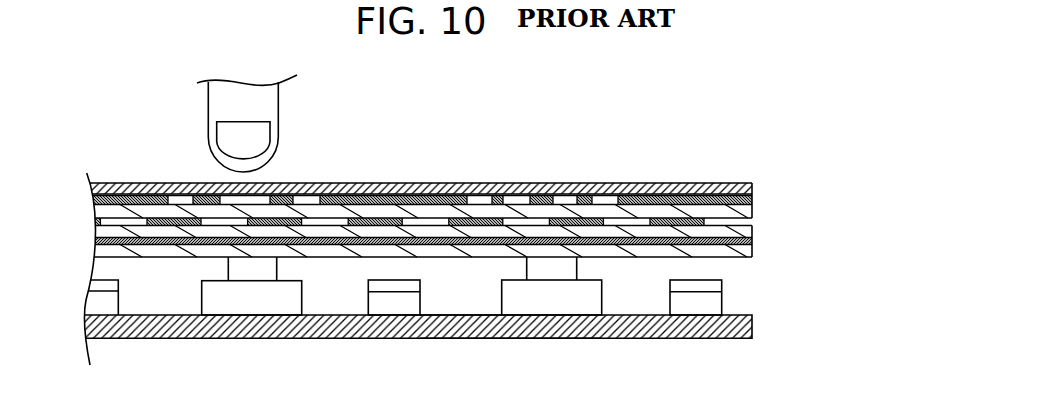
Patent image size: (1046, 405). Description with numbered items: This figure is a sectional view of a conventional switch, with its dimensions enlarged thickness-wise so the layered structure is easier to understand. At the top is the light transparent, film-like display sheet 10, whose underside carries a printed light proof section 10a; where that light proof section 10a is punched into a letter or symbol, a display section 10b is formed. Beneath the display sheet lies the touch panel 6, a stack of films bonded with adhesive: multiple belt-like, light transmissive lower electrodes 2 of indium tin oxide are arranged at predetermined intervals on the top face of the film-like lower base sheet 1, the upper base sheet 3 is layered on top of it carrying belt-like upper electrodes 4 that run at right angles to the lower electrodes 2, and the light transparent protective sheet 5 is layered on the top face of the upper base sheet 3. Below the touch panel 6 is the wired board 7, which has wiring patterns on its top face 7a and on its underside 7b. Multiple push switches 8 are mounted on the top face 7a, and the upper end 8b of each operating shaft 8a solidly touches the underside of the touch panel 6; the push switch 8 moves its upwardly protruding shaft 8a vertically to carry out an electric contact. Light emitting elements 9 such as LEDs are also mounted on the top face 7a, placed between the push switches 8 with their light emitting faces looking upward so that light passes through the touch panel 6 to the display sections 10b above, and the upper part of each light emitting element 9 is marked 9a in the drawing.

The lower base sheet 1 is at (708, 251).
The lower electrode 2 is at (706, 250).
The upper base sheet 3 is at (700, 229).
The upper electrode 4 is at (708, 212).
The protective sheet 5 is at (745, 200).
The touch panel 6 is at (443, 218).
The wired board 7 is at (752, 334).
The top face 7a is at (480, 323).
The underside 7b is at (515, 340).
The push switch 8 is at (290, 300).
The operating shaft 8a is at (250, 270).
The upper end 8b is at (244, 257).
The light emitting element 9 is at (388, 298).
The component terminal 9a is at (400, 287).
The display sheet 10 is at (655, 192).
The light proof section 10a is at (390, 195).
The display section 10b is at (560, 198).